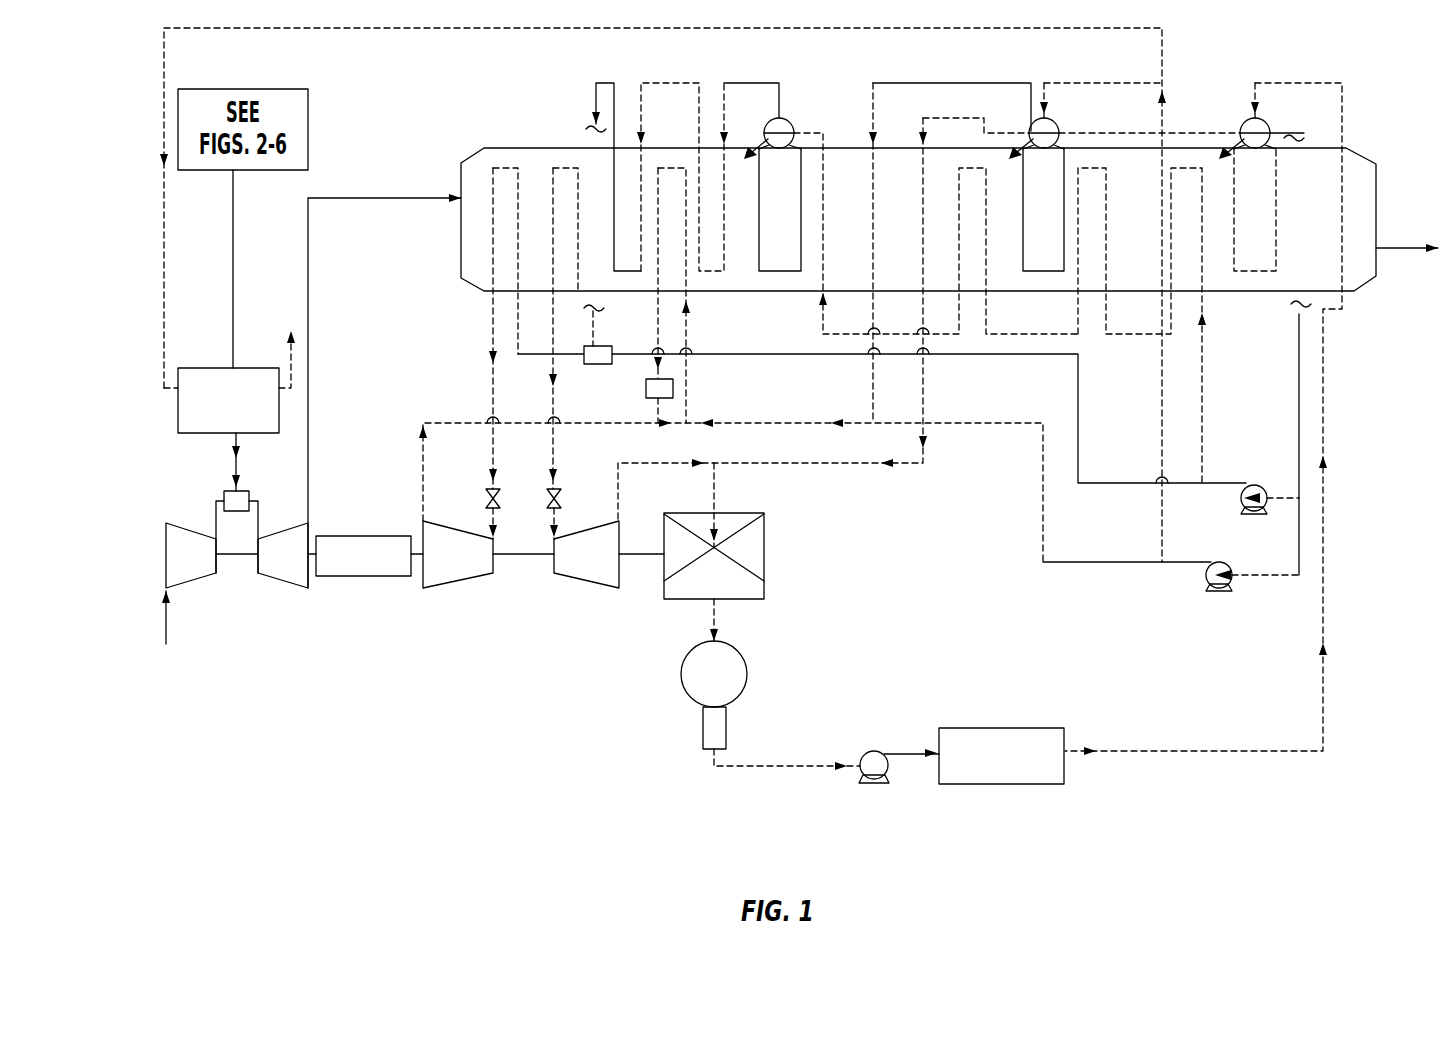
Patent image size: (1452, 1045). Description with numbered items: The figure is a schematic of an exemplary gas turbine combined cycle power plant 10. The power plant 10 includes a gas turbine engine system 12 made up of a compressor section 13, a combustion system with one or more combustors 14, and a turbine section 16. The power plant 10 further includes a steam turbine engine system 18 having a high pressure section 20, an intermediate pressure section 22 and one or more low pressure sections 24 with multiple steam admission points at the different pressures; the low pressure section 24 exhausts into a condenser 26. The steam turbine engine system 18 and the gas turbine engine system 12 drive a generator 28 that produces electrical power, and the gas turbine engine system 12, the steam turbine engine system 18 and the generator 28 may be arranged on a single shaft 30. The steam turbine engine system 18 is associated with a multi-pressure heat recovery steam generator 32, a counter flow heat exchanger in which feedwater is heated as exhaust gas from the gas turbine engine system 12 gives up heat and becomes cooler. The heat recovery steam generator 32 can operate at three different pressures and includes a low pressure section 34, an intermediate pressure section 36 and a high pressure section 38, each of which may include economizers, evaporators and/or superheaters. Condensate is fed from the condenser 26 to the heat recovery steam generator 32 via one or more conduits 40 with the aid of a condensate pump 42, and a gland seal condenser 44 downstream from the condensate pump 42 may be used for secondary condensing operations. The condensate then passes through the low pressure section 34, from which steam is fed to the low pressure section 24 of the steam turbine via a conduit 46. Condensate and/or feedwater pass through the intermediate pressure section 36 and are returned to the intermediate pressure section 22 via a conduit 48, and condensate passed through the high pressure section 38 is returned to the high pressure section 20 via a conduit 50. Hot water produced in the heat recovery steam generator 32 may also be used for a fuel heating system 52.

The gas turbine combined cycle power plant 10 is at (392, 682).
The gas turbine engine system 12 is at (197, 624).
The compressor section 13 is at (177, 522).
The combustor 14 is at (223, 495).
The turbine section 16 is at (303, 588).
The steam turbine engine system 18 is at (527, 562).
The high pressure section 20 is at (463, 584).
The intermediate pressure section 22 is at (597, 583).
The low pressure section 24 is at (765, 547).
The condenser 26 is at (670, 663).
The generator 28 is at (367, 535).
The single shaft 30 is at (648, 560).
The heat recovery steam generator 32 is at (540, 146).
The low pressure section 34 is at (1321, 223).
The intermediate pressure section 36 is at (1019, 225).
The high pressure section 38 is at (756, 222).
The conduit 40 is at (730, 768).
The condensate pump 42 is at (862, 773).
The gland seal condenser 44 is at (1022, 783).
The conduit 46 is at (907, 465).
The conduit 48 is at (553, 443).
The conduit 50 is at (492, 443).
The fuel heating system 52 is at (218, 367).